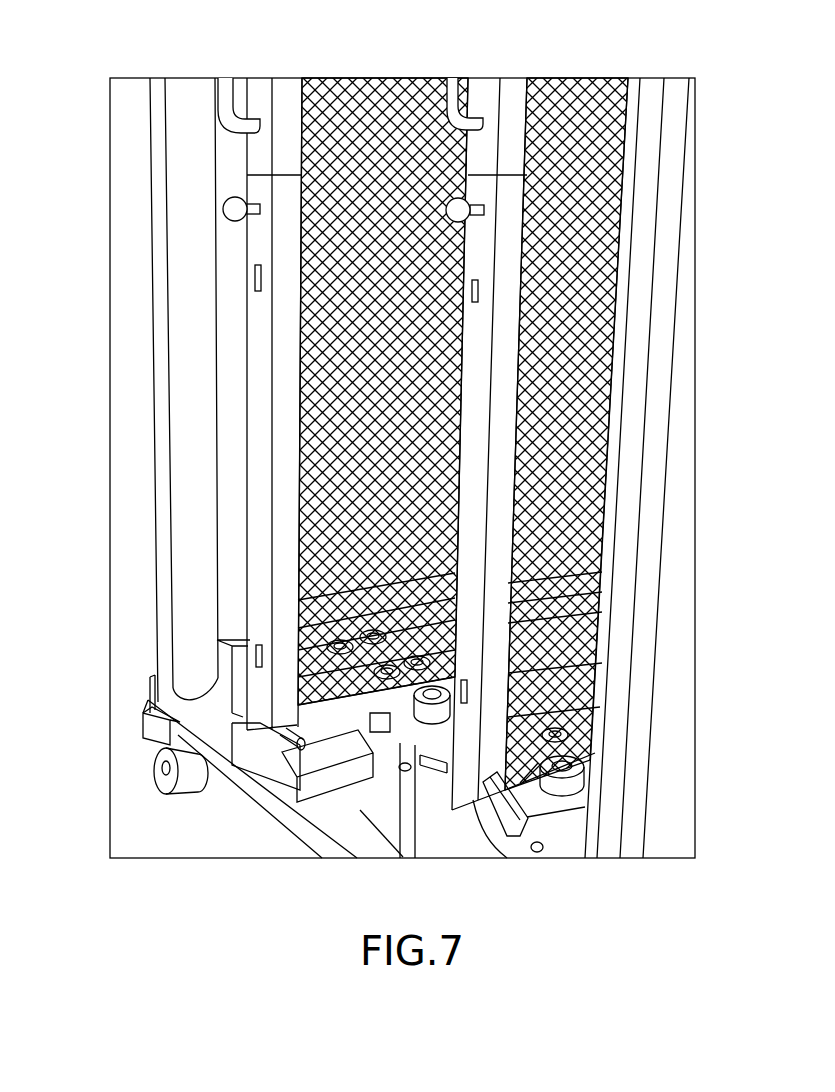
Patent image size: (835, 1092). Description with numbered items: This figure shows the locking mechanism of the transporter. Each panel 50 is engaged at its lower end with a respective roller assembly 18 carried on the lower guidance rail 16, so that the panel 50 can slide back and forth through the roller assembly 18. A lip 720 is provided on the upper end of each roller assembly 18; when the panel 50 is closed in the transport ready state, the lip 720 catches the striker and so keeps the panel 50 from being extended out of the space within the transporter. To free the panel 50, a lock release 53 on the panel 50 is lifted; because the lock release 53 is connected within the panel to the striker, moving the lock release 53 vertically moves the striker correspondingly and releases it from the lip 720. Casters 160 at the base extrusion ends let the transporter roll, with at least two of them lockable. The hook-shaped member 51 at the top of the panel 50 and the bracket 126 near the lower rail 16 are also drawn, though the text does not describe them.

The lower guidance rail 16 is at (347, 827).
The roller assembly 18 is at (565, 799).
The panel 50 is at (272, 350).
The hook 51 is at (227, 93).
The lock release 53 is at (235, 207).
The bracket 126 is at (188, 703).
The caster 160 is at (168, 778).
The lip 720 is at (373, 718).